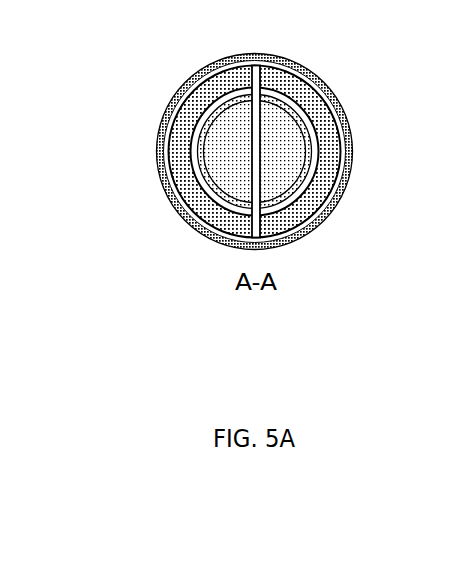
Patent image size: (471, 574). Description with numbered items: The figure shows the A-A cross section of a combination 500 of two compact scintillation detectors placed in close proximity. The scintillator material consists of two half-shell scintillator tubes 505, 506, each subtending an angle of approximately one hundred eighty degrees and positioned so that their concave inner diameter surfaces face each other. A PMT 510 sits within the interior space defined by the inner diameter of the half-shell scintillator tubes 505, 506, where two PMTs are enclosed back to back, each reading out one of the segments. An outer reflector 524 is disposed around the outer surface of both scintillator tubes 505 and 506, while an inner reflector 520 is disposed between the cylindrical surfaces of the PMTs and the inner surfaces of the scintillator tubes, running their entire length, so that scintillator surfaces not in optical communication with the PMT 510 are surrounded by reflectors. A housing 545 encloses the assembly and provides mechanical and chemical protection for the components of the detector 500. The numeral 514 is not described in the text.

The combination 500 is at (171, 76).
The half-shell scintillator tube 505 is at (305, 210).
The half-shell scintillator tube 506 is at (188, 192).
The PMT 510 is at (313, 153).
The central lumen core 514 is at (238, 125).
The inner reflector 520 is at (313, 168).
The outer reflector 524 is at (197, 231).
The housing 545 is at (318, 72).